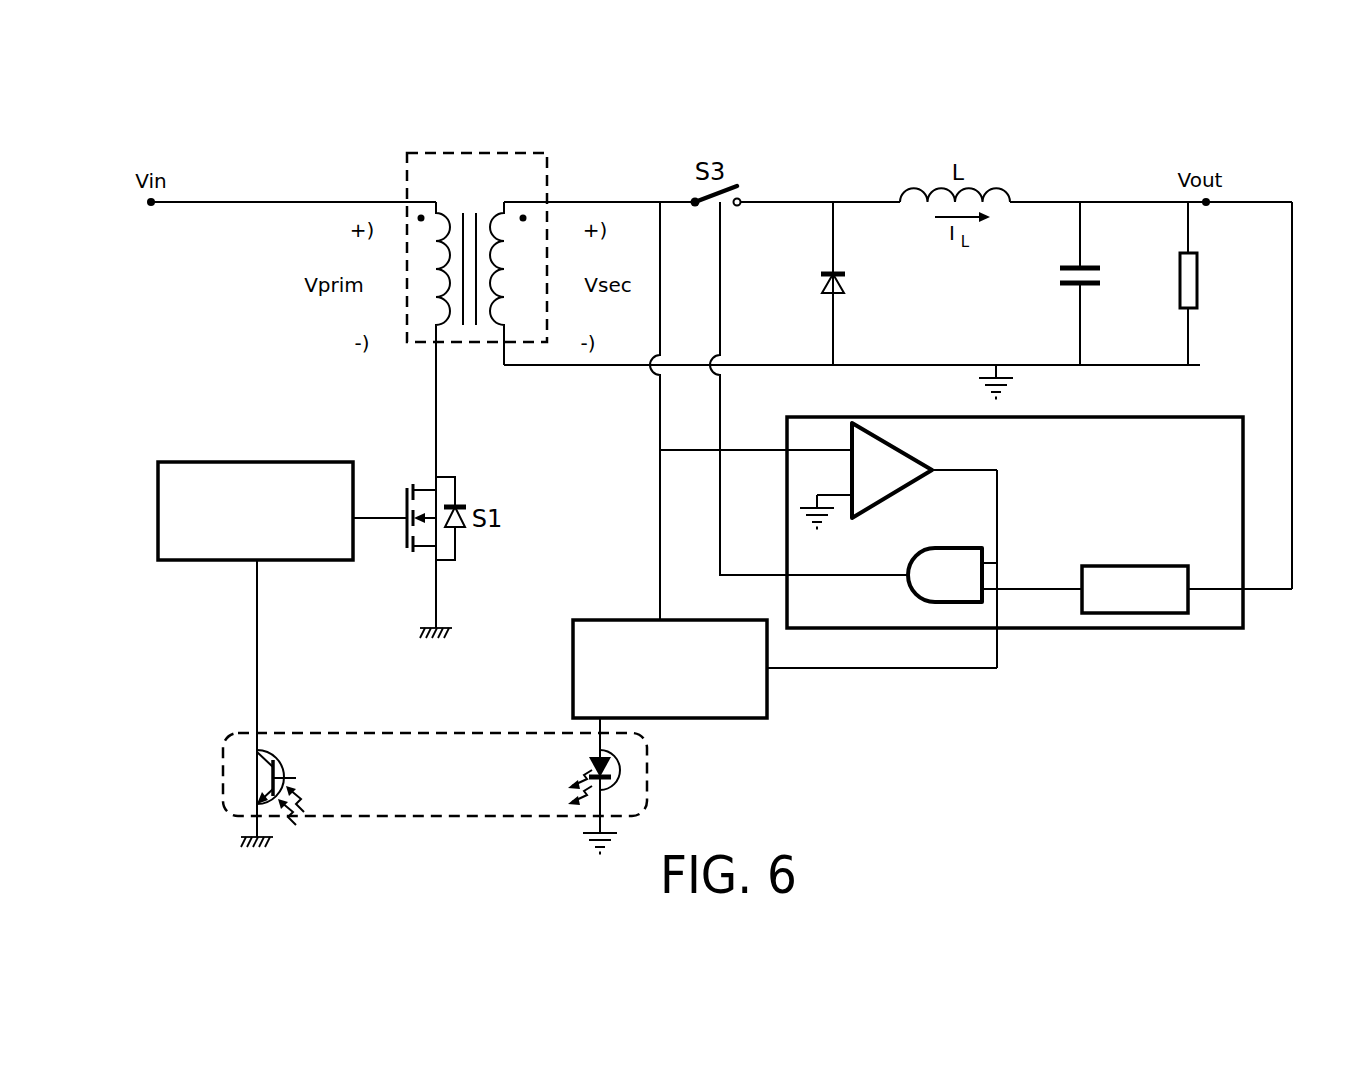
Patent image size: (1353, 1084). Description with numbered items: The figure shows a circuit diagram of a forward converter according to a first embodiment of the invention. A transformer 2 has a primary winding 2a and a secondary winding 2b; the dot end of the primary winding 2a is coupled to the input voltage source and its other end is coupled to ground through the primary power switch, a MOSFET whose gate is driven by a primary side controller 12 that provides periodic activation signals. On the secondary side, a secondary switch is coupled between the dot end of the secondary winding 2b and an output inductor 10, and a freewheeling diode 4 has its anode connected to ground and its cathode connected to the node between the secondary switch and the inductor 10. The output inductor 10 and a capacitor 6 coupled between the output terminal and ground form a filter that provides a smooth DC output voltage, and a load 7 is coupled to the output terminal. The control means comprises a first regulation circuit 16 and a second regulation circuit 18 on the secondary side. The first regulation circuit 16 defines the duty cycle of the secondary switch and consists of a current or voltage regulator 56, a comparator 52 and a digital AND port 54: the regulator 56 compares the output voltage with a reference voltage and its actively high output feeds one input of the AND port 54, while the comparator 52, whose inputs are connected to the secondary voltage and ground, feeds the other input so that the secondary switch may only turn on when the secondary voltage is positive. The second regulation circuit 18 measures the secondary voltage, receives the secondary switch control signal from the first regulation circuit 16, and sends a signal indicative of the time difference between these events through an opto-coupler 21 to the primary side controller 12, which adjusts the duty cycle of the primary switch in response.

The transformer 2 is at (470, 284).
The primary winding 2a is at (436, 212).
The secondary winding 2b is at (498, 212).
The freewheeling diode 4 is at (847, 284).
The capacitor 6 is at (1068, 290).
The load 7 is at (1178, 277).
The output inductor 10 is at (196, 204).
The primary side controller 12 is at (255, 460).
The first regulation circuit 16 is at (1015, 556).
The second regulation circuit 18 is at (573, 668).
The opto-coupler 21 is at (650, 783).
The comparator 52 is at (905, 490).
The digital AND port 54 is at (908, 588).
The current or voltage regulator 56 is at (1135, 565).